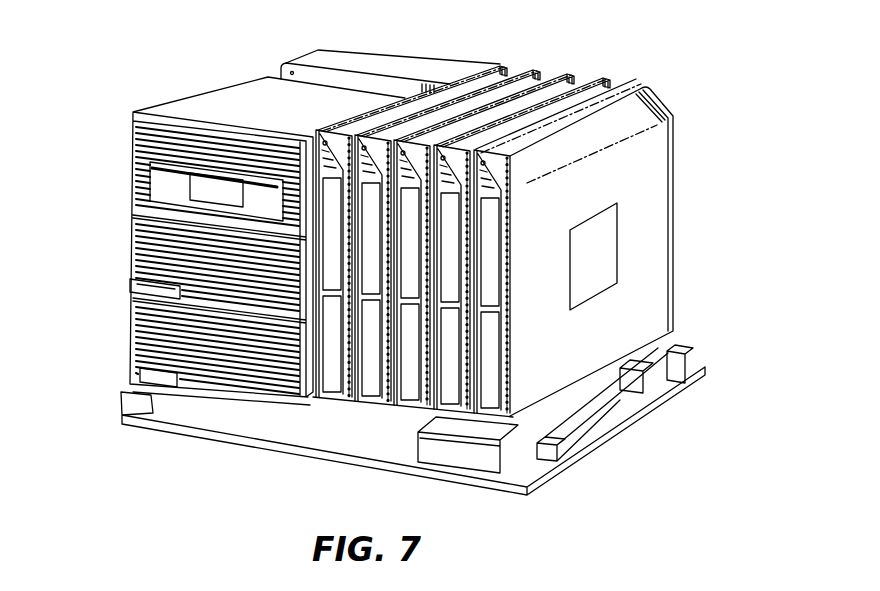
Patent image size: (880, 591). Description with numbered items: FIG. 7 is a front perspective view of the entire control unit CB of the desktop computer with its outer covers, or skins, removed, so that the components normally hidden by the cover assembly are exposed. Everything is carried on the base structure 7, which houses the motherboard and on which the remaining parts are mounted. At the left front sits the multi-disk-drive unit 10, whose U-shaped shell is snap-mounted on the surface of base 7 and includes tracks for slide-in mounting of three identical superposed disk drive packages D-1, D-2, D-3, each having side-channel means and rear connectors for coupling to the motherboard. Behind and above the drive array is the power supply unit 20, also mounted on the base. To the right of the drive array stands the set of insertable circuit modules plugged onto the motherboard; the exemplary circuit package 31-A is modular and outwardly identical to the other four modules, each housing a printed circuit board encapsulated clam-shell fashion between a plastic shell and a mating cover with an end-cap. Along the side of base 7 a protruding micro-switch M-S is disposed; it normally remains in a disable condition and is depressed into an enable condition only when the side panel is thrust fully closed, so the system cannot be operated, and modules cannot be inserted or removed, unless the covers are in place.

The disk drive array 10 is at (196, 84).
The disk drive package D-1 is at (130, 172).
The disk drive package D-2 is at (131, 257).
The disk drive package D-3 is at (131, 331).
The power supply unit 20 is at (402, 56).
The control unit CB is at (695, 64).
The circuit package 31-A is at (678, 123).
The base structure 7 is at (285, 436).
The micro-switch M-S is at (667, 394).